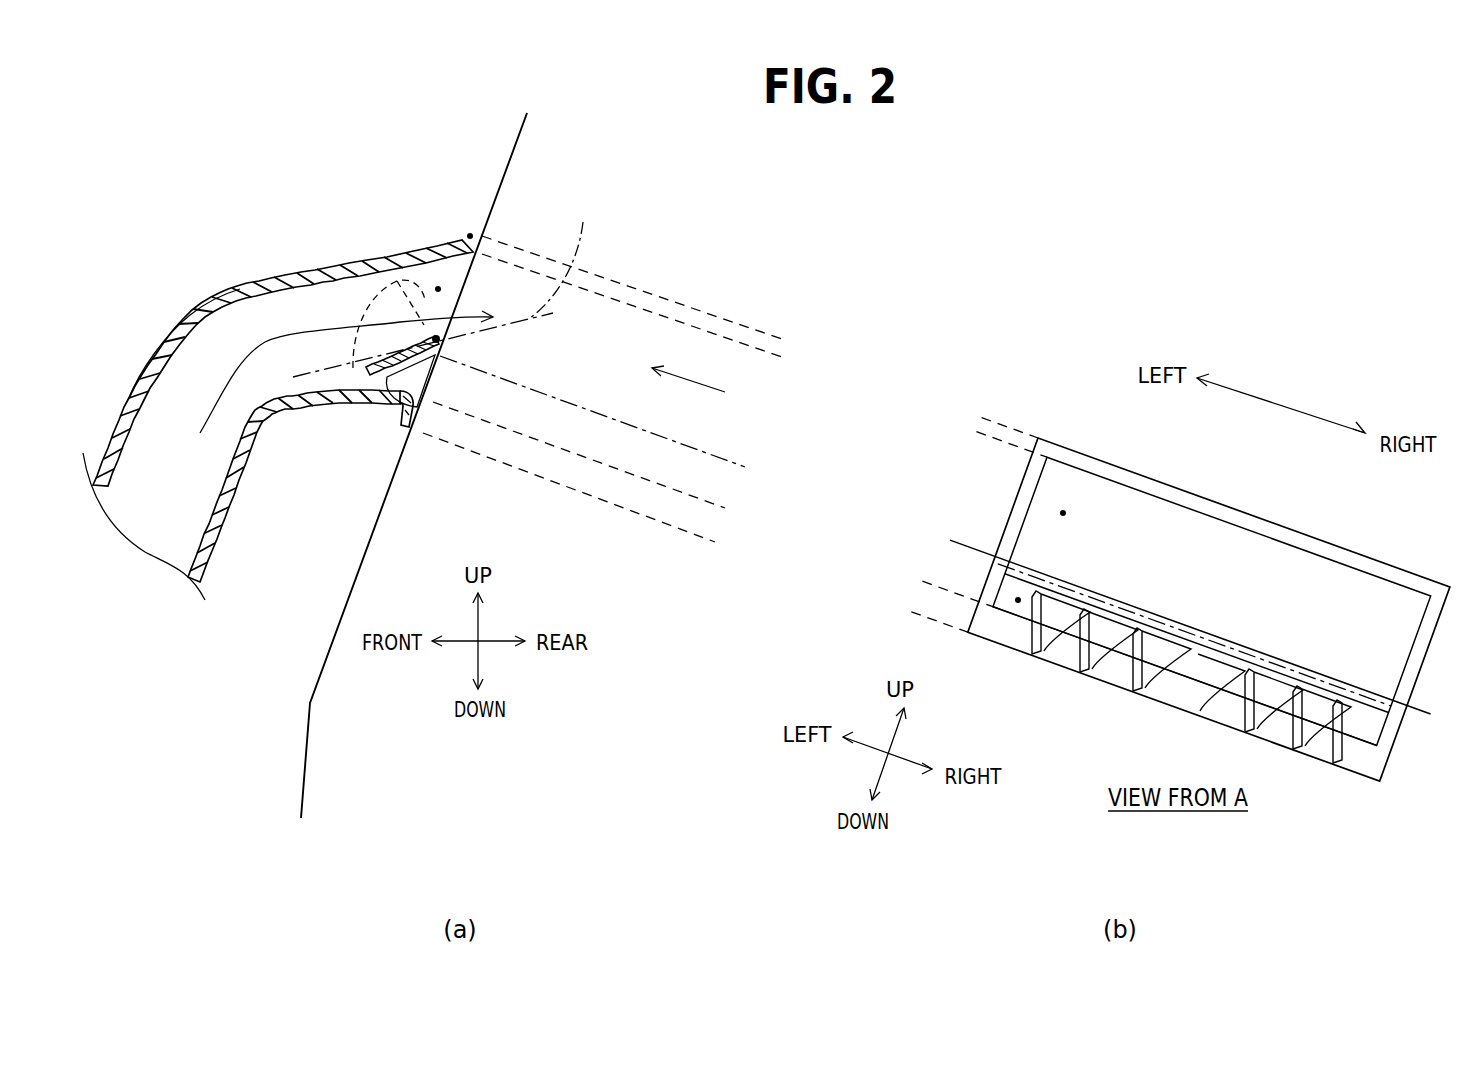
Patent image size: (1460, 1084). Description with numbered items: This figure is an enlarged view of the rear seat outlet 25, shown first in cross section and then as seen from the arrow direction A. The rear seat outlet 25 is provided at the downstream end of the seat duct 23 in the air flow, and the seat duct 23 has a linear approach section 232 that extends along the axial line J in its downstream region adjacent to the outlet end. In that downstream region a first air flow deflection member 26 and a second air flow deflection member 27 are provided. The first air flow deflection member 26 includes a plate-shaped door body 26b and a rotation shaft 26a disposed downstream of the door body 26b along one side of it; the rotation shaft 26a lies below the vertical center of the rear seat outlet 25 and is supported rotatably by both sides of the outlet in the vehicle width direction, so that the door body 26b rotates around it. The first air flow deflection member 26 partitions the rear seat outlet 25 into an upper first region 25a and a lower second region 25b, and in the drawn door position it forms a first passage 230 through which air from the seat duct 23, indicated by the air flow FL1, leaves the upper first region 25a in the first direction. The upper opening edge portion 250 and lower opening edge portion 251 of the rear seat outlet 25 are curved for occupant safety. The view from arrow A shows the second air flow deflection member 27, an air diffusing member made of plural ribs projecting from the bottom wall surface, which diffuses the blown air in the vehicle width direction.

The seat duct 23 is at (251, 455).
The linear approach section 232 is at (338, 405).
The first passage 230 is at (438, 287).
The rear seat outlet 25 is at (470, 287).
The upper first region 25a is at (1063, 512).
The lower second region 25b is at (1018, 601).
The upper opening edge portion 250 is at (1246, 520).
The lower opening edge portion 251 is at (1313, 747).
The first air flow deflection member 26 is at (290, 143).
The rotation shaft 26a is at (437, 338).
The door body 26b is at (379, 364).
The second air flow deflection member 27 is at (433, 375).
The air flow FL1 is at (257, 345).
The axial line J is at (441, 284).
The arrow direction A is at (699, 390).